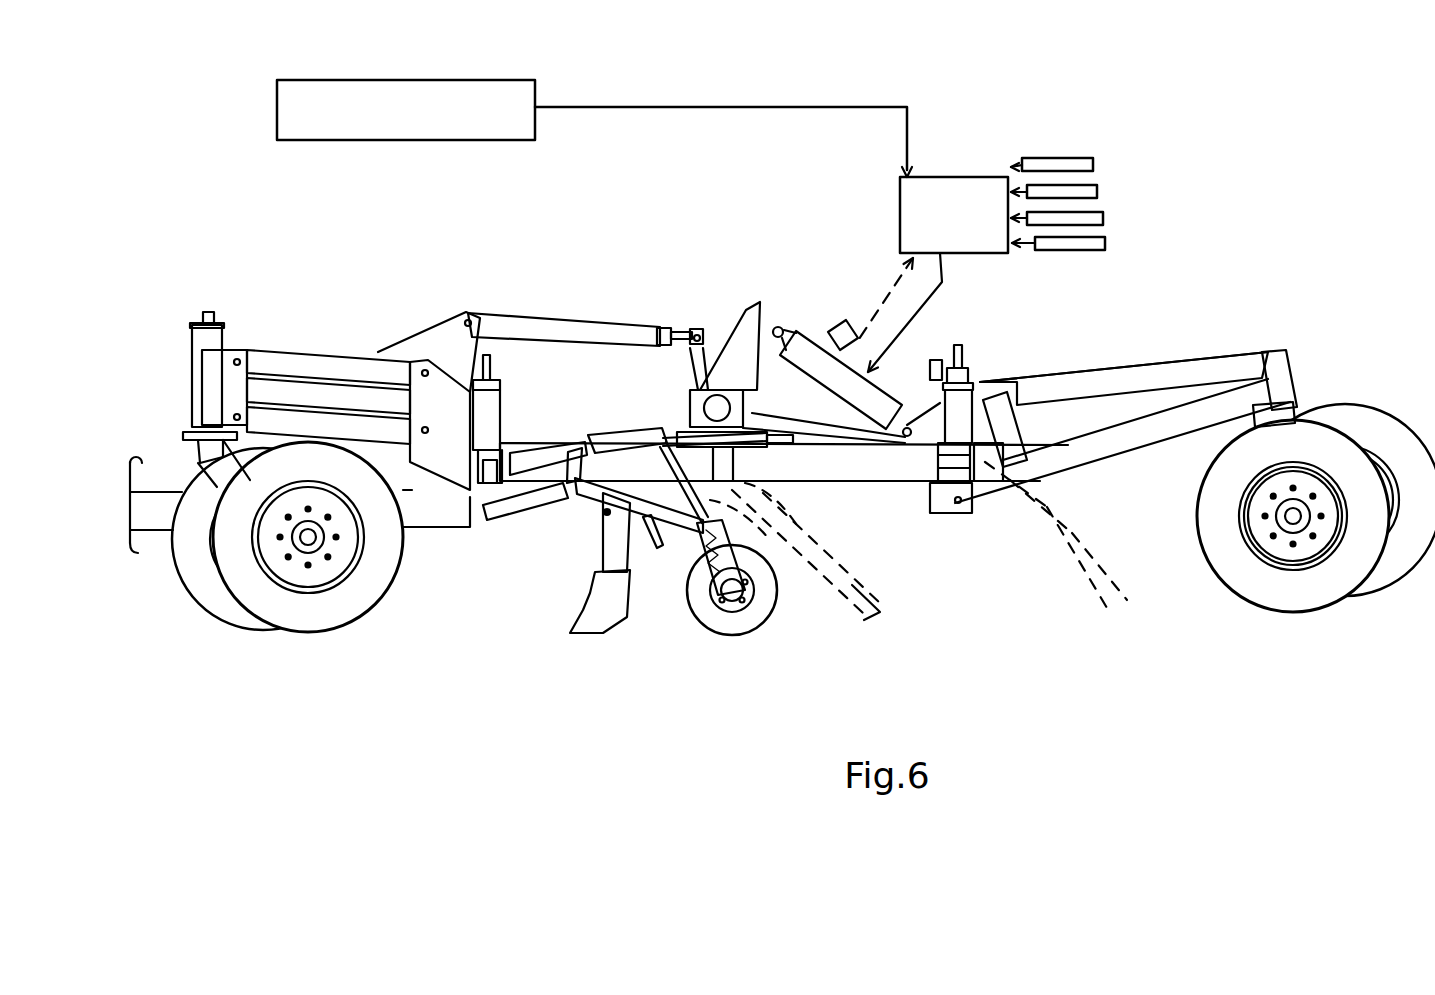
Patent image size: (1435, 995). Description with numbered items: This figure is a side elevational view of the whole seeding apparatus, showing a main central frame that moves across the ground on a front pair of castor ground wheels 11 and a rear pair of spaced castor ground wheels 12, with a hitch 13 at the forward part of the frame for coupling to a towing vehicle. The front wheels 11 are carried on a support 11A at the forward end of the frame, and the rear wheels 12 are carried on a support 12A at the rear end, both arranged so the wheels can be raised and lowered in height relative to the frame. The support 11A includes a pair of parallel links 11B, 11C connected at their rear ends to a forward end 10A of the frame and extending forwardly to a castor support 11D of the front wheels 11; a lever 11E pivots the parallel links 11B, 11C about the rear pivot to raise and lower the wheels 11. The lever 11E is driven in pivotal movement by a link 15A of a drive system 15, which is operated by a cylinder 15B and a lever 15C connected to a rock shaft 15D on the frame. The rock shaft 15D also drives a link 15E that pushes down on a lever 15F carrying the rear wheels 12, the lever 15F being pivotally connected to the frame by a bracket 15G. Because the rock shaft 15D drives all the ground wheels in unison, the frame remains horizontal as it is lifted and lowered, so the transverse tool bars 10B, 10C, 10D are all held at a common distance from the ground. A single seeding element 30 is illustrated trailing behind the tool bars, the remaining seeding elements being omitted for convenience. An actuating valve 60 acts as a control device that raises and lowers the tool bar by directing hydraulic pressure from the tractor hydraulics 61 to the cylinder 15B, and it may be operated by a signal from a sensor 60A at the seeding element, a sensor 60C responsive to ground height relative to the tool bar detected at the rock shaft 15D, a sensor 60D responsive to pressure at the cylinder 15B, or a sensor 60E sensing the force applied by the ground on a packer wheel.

The forward end of the frame 10A is at (466, 362).
The forward tool bar 10B is at (500, 448).
The tool bar 10C is at (735, 460).
The rearward tool bar 10D is at (1007, 500).
The front ground wheels 11 is at (387, 612).
The front wheel support 11A is at (327, 334).
The parallel link 11B is at (292, 345).
The parallel link 11C is at (258, 420).
The castor support 11D is at (207, 300).
The lever 11E is at (440, 340).
The rear ground wheels 12 is at (1258, 583).
The rear wheel support 12A is at (1093, 350).
The hitch 13 is at (145, 517).
The drive system 15 is at (722, 312).
The link 15A is at (578, 327).
The cylinder 15B is at (921, 353).
The lever 15C is at (753, 310).
The rock shaft 15D is at (690, 392).
The link 15E is at (1057, 377).
The lever 15F is at (1103, 450).
The bracket 15G is at (945, 513).
The seeding element 30 is at (640, 632).
The actuating valve 60 is at (970, 169).
The sensor 60A is at (1080, 157).
The sensor 60C is at (745, 407).
The sensor 60D is at (1097, 192).
The sensor 60E is at (1105, 245).
The tractor hydraulics 61 is at (517, 88).